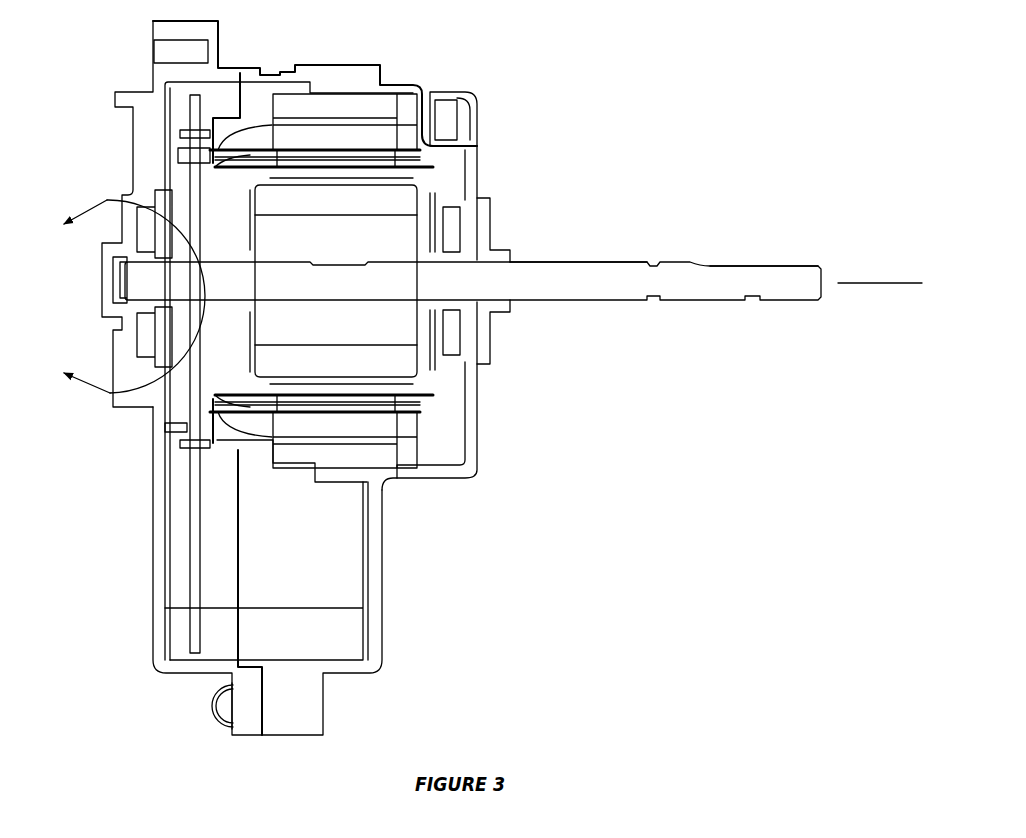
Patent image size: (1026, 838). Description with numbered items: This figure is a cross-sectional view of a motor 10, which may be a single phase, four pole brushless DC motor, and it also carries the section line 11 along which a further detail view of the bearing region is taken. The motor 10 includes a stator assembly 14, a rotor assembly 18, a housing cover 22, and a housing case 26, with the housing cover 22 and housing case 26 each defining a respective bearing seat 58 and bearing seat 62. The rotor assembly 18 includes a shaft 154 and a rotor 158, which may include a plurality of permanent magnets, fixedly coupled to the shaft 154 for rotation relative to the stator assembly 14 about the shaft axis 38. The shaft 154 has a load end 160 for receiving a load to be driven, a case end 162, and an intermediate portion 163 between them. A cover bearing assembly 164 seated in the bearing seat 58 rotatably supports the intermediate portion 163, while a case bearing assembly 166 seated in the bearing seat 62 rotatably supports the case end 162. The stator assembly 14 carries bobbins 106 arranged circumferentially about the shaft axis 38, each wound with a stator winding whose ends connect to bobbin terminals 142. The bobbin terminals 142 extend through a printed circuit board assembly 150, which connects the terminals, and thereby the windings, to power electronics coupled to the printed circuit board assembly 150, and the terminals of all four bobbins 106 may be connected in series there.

The motor 10 is at (532, 80).
The section line 11 is at (124, 296).
The stator assembly 14 is at (424, 434).
The rotor assembly 18 is at (423, 177).
The housing cover 22 is at (398, 90).
The housing case 26 is at (157, 580).
The shaft axis 38 is at (898, 283).
The bearing seat 58 is at (446, 228).
The bearing seat 62 is at (150, 320).
The bobbin 106 is at (230, 125).
The bobbin terminals 142 is at (190, 117).
The printed circuit board assembly 150 is at (195, 552).
The shaft 154 is at (550, 286).
The rotor 158 is at (363, 314).
The load end 160 is at (710, 265).
The case end 162 is at (143, 277).
The intermediate portion 163 is at (457, 282).
The cover bearing assembly 164 is at (453, 319).
The case bearing assembly 166 is at (143, 241).